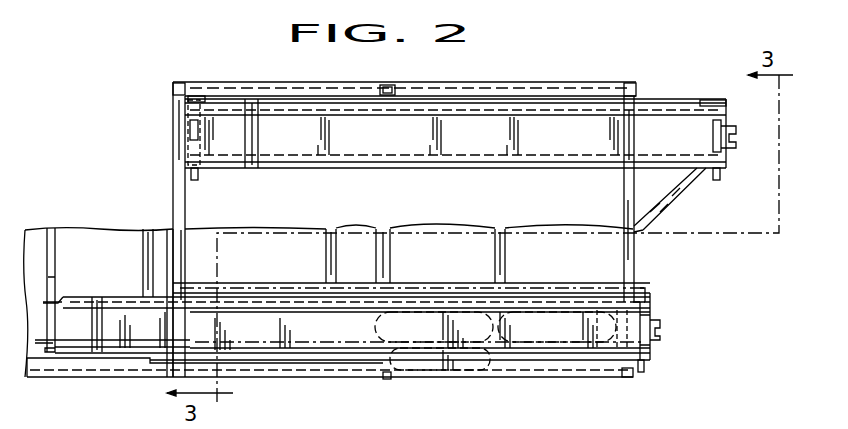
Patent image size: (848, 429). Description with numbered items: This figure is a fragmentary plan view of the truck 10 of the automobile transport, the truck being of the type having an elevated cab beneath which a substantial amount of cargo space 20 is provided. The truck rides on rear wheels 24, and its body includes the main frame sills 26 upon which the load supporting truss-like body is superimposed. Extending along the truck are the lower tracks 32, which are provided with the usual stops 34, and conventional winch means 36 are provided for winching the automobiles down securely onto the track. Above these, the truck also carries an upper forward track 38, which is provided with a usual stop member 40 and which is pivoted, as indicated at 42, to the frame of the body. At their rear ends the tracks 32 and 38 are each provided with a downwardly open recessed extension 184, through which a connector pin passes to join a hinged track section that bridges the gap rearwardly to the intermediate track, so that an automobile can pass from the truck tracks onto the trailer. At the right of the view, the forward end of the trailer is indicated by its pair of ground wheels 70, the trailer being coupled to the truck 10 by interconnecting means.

The truck 10 is at (638, 273).
The cargo space 20 is at (80, 242).
The rear wheels 24 is at (471, 368).
The main frame sills 26 is at (546, 283).
The tracks 32 is at (334, 337).
The stops 34 is at (98, 300).
The winch means 36 is at (194, 176).
The upper forward track 38 is at (594, 150).
The stop member 40 is at (250, 160).
The pivot 42 is at (188, 136).
The ground wheels 70 is at (560, 366).
The downwardly open recessed extension 184 is at (730, 150).